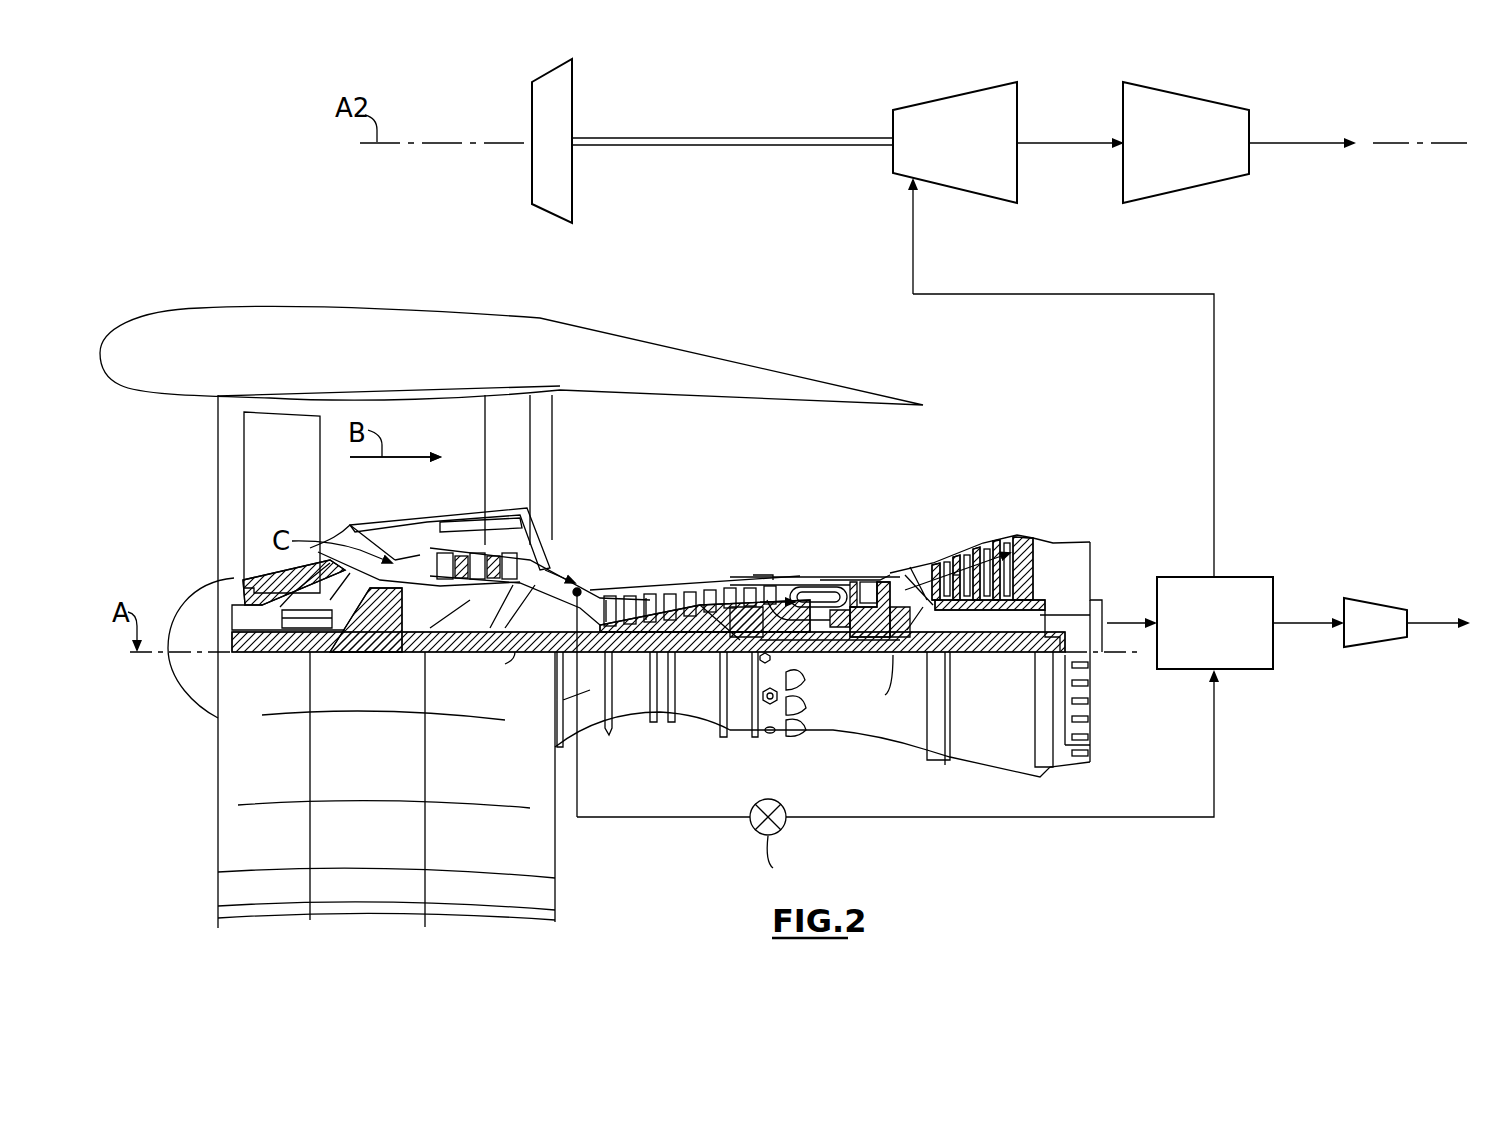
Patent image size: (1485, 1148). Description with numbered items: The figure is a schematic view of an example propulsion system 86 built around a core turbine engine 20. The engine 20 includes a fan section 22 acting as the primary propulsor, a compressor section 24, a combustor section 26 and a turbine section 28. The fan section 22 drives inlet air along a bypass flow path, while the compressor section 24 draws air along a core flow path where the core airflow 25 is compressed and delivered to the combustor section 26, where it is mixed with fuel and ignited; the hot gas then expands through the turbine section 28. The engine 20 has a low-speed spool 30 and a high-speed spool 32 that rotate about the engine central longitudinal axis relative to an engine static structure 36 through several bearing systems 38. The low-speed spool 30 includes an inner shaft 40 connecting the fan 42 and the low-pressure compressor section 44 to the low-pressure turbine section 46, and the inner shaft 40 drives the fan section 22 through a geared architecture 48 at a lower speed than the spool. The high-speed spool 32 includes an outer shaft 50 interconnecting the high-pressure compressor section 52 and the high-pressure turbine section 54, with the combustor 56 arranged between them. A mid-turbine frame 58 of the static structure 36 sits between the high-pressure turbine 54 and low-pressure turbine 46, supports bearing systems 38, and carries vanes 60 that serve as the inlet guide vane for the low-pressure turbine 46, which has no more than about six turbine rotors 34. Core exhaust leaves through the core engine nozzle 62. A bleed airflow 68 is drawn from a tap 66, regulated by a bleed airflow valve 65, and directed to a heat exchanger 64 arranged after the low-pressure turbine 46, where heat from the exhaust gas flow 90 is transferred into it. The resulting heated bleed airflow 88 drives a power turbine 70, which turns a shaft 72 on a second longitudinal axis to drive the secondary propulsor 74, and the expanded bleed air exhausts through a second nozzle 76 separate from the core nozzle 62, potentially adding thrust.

The core turbine engine 20 is at (192, 768).
The fan section 22 is at (443, 292).
The compressor section 24 is at (760, 498).
The core airflow 25 is at (462, 555).
The combustor section 26 is at (856, 498).
The turbine section 28 is at (1050, 498).
The low-speed spool 30 is at (700, 660).
The high-speed spool 32 is at (715, 600).
The turbine rotors 34 is at (992, 655).
The engine static structure 36 is at (740, 660).
The bearing systems 38 is at (292, 652).
The inner shaft 40 is at (559, 670).
The fan 42 is at (296, 507).
The low-pressure compressor section 44 is at (512, 540).
The low-pressure turbine section 46 is at (985, 530).
The geared architecture 48 is at (390, 650).
The outer shaft 50 is at (808, 655).
The high-pressure compressor section 52 is at (672, 598).
The high-pressure turbine section 54 is at (862, 580).
The combustor 56 is at (808, 597).
The mid-turbine frame 58 is at (912, 572).
The vanes 60 is at (945, 680).
The core engine nozzle 62 is at (1375, 647).
The heat exchanger 64 is at (1245, 576).
The bleed airflow valve 65 is at (955, 580).
The tap 66 is at (587, 570).
The bleed airflow 68 is at (982, 820).
The power turbine 70 is at (955, 92).
The shaft 72 is at (750, 145).
The secondary propulsor 74 is at (563, 96).
The second nozzle 76 is at (1190, 172).
The propulsion system 86 is at (203, 180).
The heated bleed airflow 88 is at (1214, 390).
The exhaust gas flow 90 is at (1124, 614).